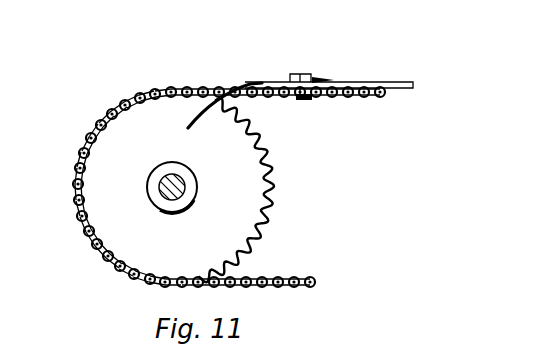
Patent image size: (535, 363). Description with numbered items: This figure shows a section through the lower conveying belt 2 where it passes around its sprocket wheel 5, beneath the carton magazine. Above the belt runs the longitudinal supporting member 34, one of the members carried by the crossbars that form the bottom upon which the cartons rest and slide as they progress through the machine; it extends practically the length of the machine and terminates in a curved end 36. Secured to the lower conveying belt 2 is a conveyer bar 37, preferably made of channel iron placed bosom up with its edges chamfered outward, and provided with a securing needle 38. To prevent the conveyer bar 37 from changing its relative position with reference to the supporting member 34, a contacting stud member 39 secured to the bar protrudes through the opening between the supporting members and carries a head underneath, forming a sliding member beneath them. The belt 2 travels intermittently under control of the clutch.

The lower conveying belt 2 is at (279, 276).
The sprocket wheel 5 is at (258, 183).
The longitudinal supporting member 34 is at (358, 82).
The curved end 36 is at (205, 117).
The conveyer bar 37 is at (292, 75).
The securing needle 38 is at (320, 76).
The contacting stud member 39 is at (303, 97).